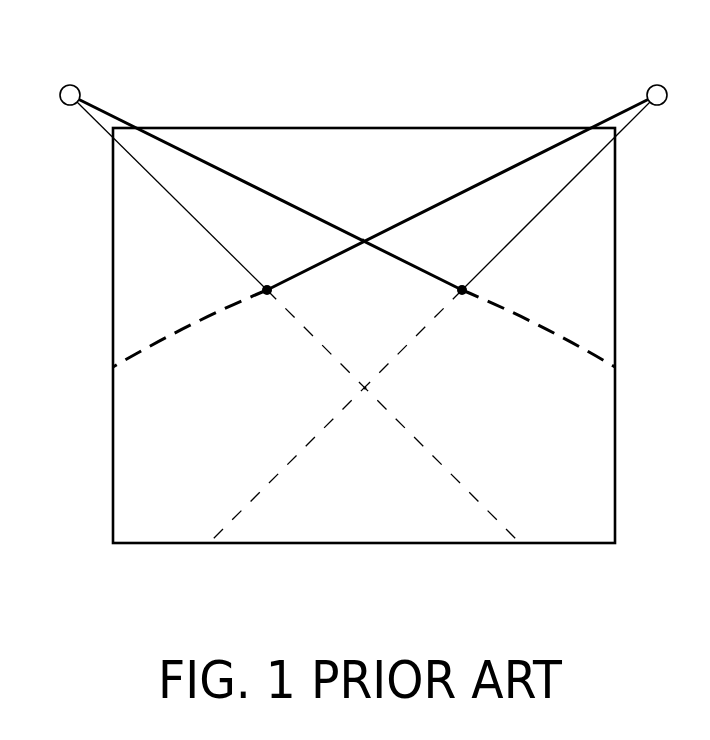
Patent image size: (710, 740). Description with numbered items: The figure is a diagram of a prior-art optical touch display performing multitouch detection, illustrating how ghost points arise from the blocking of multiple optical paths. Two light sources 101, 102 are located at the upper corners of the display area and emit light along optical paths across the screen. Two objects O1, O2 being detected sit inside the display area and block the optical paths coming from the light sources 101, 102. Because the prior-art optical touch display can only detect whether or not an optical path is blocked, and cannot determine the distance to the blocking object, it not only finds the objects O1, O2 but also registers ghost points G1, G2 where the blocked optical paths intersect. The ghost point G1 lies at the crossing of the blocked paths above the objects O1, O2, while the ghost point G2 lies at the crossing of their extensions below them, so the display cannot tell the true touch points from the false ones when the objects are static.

The light source 101 is at (70, 84).
The light source 102 is at (657, 84).
The object being detected O1 is at (262, 291).
The object being detected O2 is at (467, 290).
The ghost point G1 is at (363, 237).
The ghost point G2 is at (365, 391).